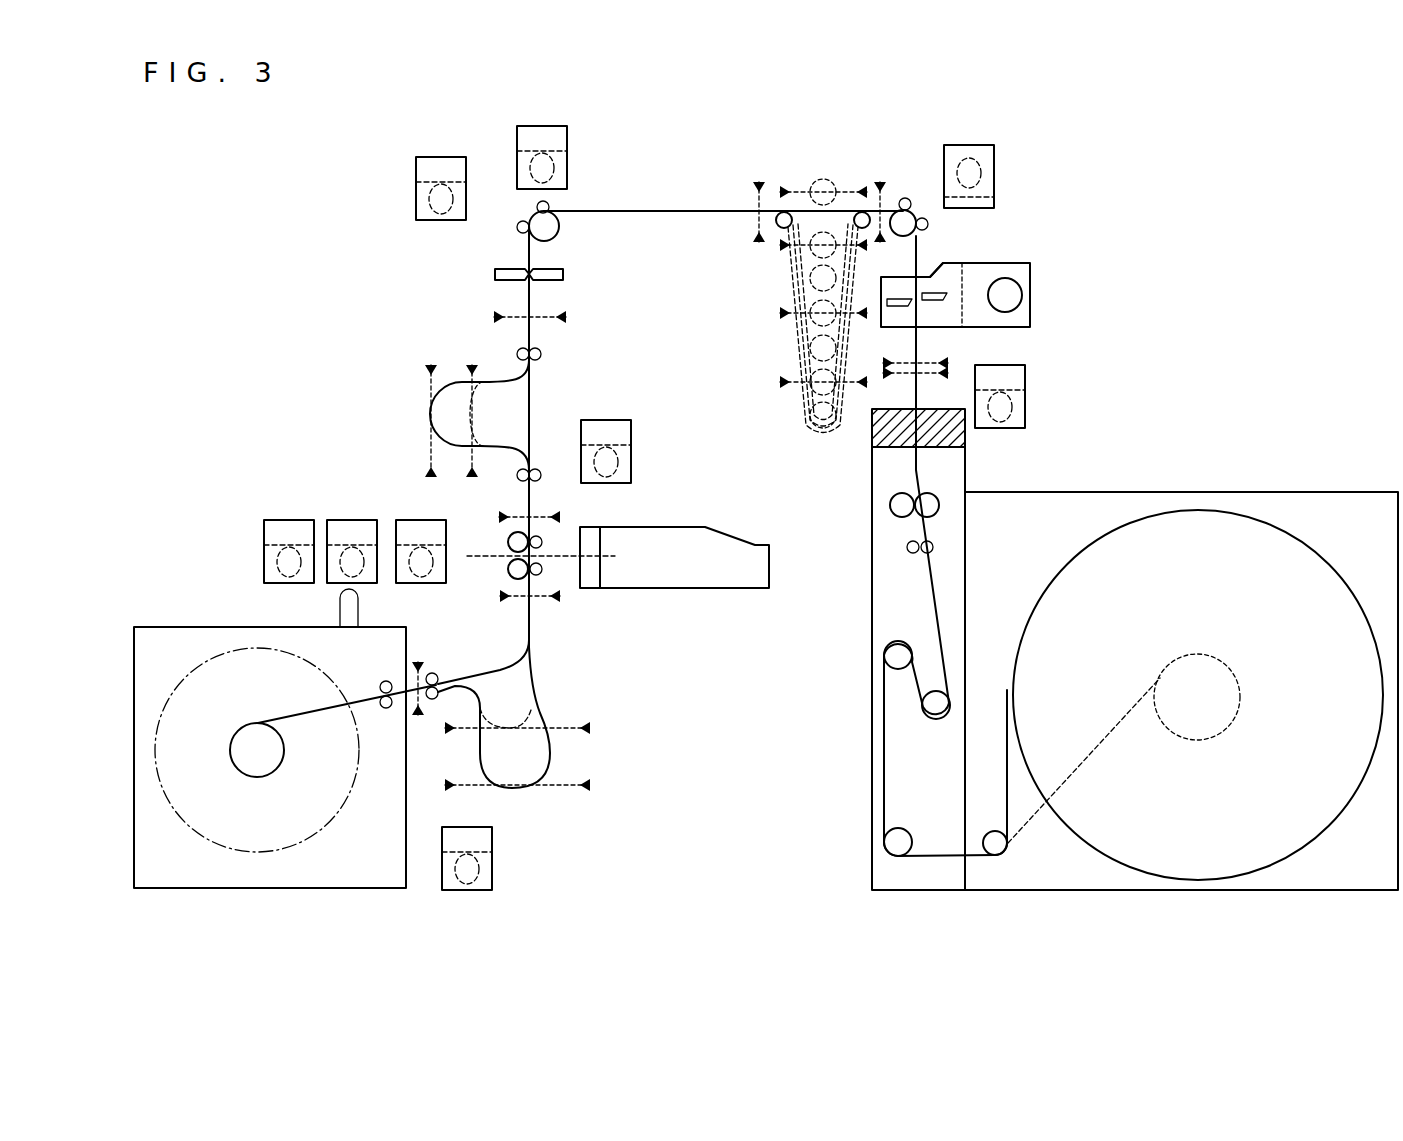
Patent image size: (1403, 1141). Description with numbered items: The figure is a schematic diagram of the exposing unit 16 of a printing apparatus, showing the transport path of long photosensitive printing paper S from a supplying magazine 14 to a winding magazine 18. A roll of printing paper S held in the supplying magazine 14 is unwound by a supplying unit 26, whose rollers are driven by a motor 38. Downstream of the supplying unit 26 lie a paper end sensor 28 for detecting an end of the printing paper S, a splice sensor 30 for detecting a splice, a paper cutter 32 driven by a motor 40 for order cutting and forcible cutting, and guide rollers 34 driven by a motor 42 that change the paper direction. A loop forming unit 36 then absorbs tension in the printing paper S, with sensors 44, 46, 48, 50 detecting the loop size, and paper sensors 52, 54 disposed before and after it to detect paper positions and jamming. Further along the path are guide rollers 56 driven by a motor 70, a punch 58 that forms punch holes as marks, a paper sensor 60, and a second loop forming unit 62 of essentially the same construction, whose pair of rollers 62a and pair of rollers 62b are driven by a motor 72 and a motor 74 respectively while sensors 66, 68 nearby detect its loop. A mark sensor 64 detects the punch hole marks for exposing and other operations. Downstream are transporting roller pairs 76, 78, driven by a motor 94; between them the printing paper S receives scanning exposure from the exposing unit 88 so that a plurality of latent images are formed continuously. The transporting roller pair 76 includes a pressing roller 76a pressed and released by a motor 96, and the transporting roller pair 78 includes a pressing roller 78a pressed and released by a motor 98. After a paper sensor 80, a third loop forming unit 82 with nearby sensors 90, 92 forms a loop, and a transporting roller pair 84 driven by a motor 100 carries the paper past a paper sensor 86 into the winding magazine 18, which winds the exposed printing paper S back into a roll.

The supplying magazine 14 is at (1330, 490).
The exposing unit 16 is at (680, 128).
The winding magazine 18 is at (180, 627).
The supplying unit 26 is at (872, 470).
The paper end sensor 28 is at (950, 373).
The splice sensor 30 is at (948, 363).
The paper cutter 32 is at (943, 270).
The guide rollers 34 is at (917, 200).
The loop forming unit 36 is at (836, 178).
The motor 38 is at (1025, 395).
The motor 40 is at (1030, 277).
The motor 42 is at (995, 162).
The sensor 44 is at (785, 188).
The sensor 46 is at (777, 247).
The sensor 48 is at (777, 315).
The sensor 50 is at (777, 384).
The paper sensor 52 is at (881, 178).
The paper sensor 54 is at (759, 178).
The guide rollers 56 is at (566, 228).
The punch 58 is at (563, 275).
The paper sensor 60 is at (566, 317).
The loop forming unit 62 is at (425, 408).
The pair of rollers 62a is at (541, 354).
The pair of rollers 62b is at (541, 470).
The mark sensor 64 is at (560, 517).
The sensor 66 is at (471, 362).
The sensor 68 is at (428, 362).
The motor 70 is at (568, 172).
The motor 72 is at (416, 175).
The motor 74 is at (631, 455).
The transporting roller pair 76 is at (507, 539).
The pressing roller 76a is at (545, 537).
The transporting roller pair 78 is at (507, 571).
The pressing roller 78a is at (543, 574).
The paper sensor 80 is at (562, 597).
The loop forming unit 82 is at (543, 805).
The transporting roller pair 84 is at (440, 675).
The paper sensor 86 is at (419, 658).
The exposing unit 88 is at (769, 563).
The sensor 90 is at (590, 728).
The sensor 92 is at (590, 785).
The motor 94 is at (402, 520).
The motor 96 is at (333, 520).
The motor 98 is at (272, 520).
The motor 100 is at (468, 891).
The printing paper S is at (240, 750).